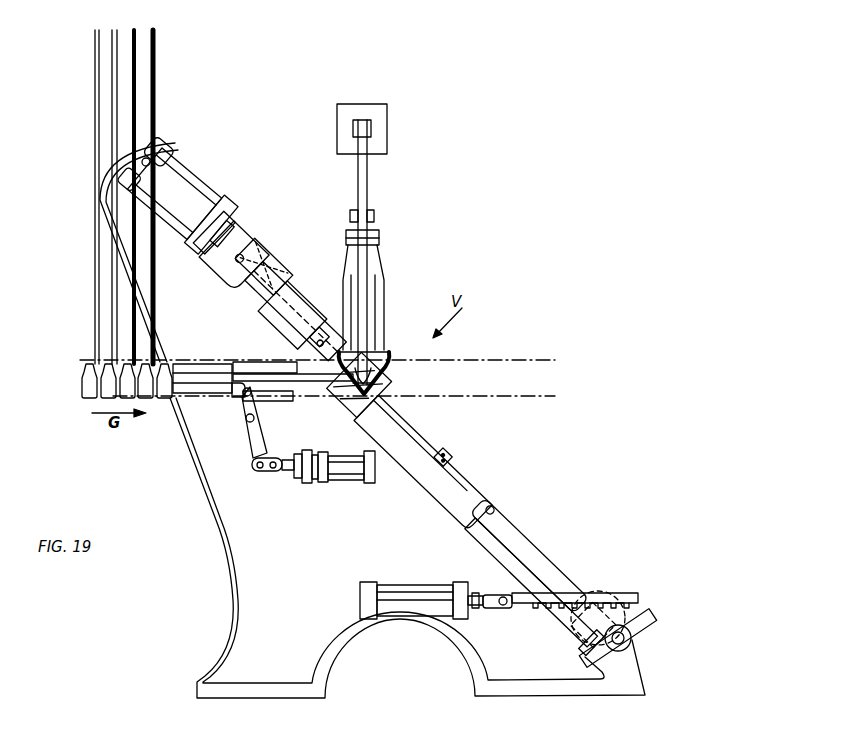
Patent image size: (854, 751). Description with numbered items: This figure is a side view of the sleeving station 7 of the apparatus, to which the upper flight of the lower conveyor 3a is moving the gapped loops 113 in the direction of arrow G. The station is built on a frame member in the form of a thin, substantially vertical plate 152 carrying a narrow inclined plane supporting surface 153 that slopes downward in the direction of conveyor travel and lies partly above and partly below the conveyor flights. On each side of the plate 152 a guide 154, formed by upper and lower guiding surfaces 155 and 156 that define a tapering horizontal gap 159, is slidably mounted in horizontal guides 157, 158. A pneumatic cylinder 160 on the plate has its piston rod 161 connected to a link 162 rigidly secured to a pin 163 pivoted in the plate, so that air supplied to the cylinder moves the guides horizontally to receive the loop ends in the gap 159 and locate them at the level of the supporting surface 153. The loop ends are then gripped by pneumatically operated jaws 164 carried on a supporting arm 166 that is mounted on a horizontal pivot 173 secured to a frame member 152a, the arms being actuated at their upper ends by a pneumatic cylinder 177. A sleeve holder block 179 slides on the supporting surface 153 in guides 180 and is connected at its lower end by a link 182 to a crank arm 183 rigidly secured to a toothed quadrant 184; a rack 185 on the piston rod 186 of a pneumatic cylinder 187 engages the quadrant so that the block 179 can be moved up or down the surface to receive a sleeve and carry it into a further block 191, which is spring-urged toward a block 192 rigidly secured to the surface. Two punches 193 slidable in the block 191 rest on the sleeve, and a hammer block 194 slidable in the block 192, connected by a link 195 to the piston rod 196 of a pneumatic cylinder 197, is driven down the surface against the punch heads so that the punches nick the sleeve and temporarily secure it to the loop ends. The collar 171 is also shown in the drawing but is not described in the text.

The lower conveyor 3a is at (88, 364).
The sleeving station 7 is at (416, 171).
The gapped loops 113 is at (118, 103).
The vertical plate 152 is at (407, 548).
The frame member 152a is at (352, 216).
The inclined plane supporting surface 153 is at (234, 291).
The guide 154 is at (242, 362).
The upper guiding surface 155 is at (296, 383).
The lower guiding surface 156 is at (354, 410).
The horizontal guide 157 is at (226, 364).
The horizontal guide 158 is at (278, 402).
The gap 159 is at (236, 396).
The pneumatic cylinder 160 is at (360, 480).
The piston rod 161 is at (290, 474).
The link 162 is at (252, 457).
The pin 163 is at (248, 421).
The jaws 164 is at (391, 362).
The supporting arm 166 is at (384, 292).
The collar 171 is at (379, 243).
The horizontal pivot 173 is at (374, 217).
The pneumatic cylinder 177 is at (372, 112).
The block 179 is at (448, 452).
The guides 180 is at (446, 496).
The link 182 is at (506, 518).
The crank arm 183 is at (608, 598).
The toothed quadrant 184 is at (583, 650).
The rack 185 is at (531, 605).
The piston rod 186 is at (489, 595).
The pneumatic cylinder 187 is at (386, 582).
The further block 191 is at (323, 344).
The further block 192 is at (283, 326).
The punches 193 is at (349, 351).
The hammer block 194 is at (300, 286).
The link 195 is at (266, 266).
The piston rod 196 is at (230, 224).
The pneumatic cylinder 197 is at (184, 168).